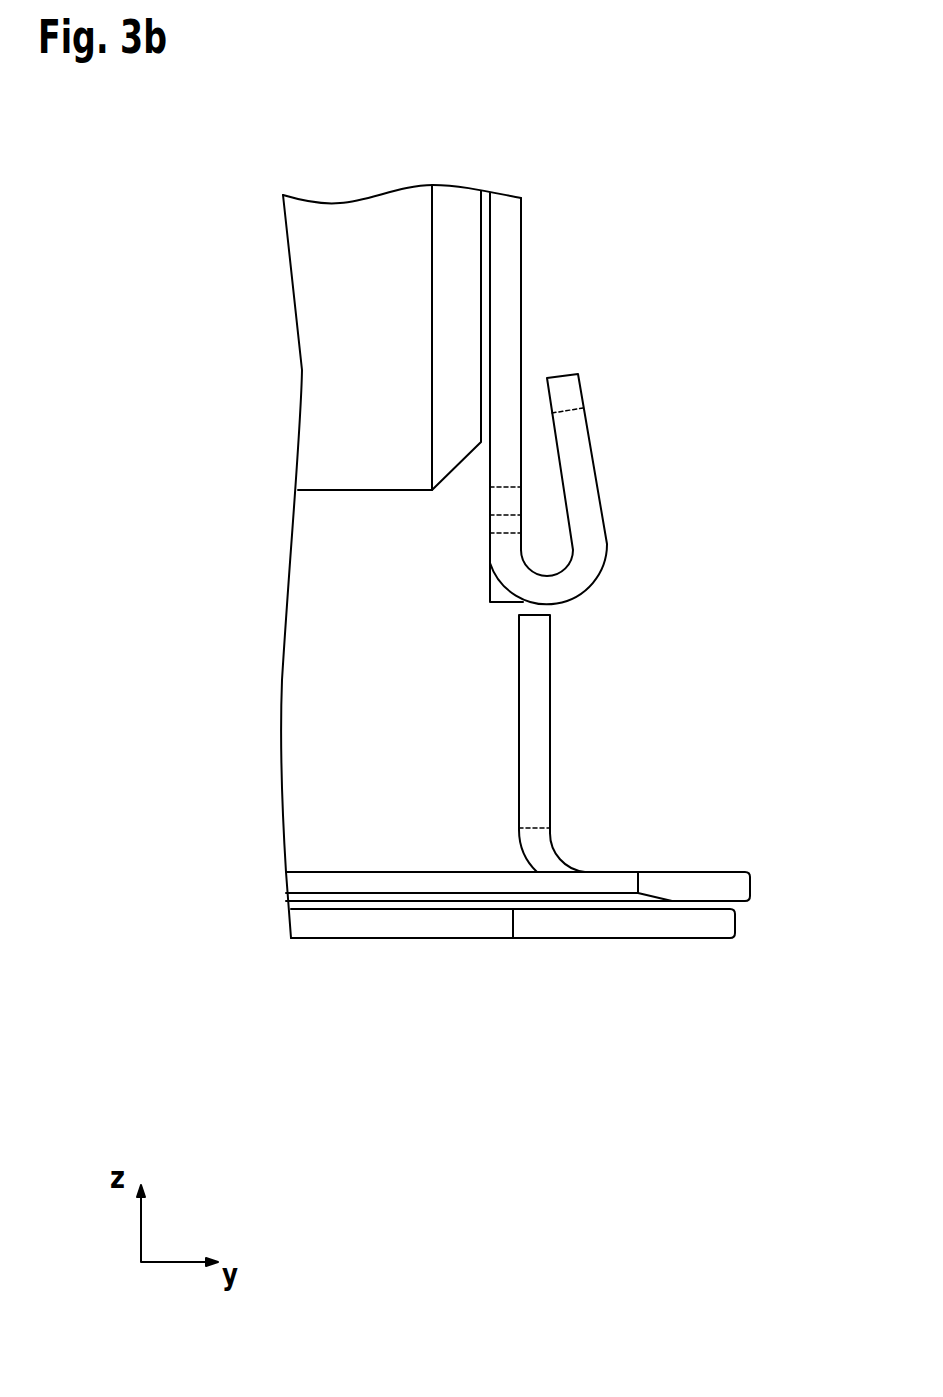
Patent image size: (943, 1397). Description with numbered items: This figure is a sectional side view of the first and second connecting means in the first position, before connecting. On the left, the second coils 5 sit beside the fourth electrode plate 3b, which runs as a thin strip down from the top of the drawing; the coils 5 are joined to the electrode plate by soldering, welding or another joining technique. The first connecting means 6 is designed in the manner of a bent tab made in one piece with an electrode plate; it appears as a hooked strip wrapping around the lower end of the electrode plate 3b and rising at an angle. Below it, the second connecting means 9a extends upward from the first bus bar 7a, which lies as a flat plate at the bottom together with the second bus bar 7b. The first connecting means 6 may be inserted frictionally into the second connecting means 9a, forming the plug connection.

The second coils 5 is at (315, 322).
The fourth electrode plate 3b is at (507, 279).
The first connecting means 6 is at (580, 482).
The second connecting means 9a is at (538, 710).
The second bus bar 7b is at (735, 882).
The first bus bar 7a is at (720, 923).